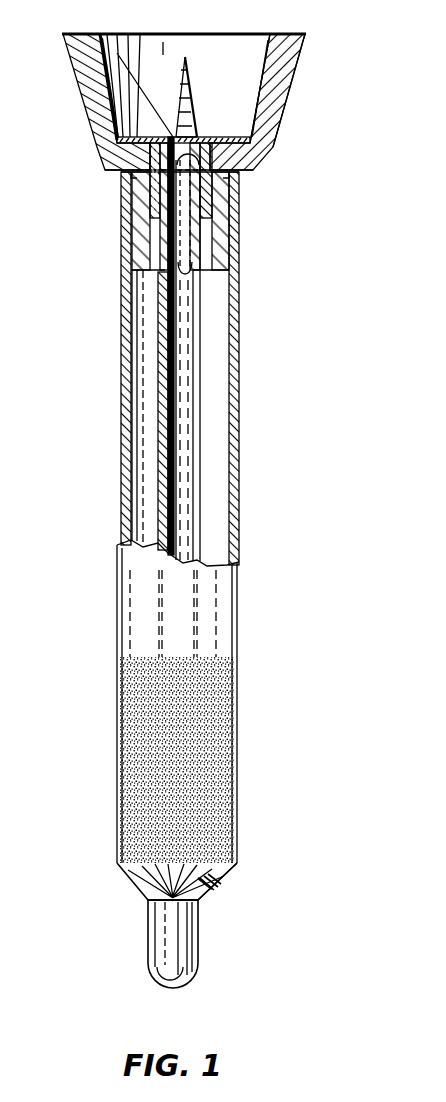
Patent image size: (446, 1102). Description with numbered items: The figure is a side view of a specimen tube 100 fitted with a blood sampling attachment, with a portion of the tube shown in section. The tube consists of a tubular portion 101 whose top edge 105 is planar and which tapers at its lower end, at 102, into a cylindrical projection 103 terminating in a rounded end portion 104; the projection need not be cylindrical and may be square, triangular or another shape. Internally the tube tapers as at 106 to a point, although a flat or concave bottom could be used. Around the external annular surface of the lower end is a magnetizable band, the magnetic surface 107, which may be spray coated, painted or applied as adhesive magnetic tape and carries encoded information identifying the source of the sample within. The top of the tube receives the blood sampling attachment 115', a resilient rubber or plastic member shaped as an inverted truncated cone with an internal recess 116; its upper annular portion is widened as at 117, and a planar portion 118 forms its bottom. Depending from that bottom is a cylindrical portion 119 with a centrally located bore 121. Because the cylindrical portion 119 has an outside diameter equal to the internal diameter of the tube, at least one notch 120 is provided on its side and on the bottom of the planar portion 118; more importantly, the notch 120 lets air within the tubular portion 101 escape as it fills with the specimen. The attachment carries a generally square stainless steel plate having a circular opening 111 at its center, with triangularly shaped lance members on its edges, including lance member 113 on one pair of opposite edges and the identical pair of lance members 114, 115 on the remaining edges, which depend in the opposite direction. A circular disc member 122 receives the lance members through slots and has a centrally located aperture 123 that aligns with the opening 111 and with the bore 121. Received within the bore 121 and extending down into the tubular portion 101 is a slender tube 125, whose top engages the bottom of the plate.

The specimen tube 100 is at (289, 31).
The tubular portion 101 is at (243, 270).
The taper of the lower end 102 is at (210, 882).
The cylindrical projection 103 is at (197, 937).
The rounded end portion 104 is at (190, 988).
The top edge 105 is at (227, 173).
The internal taper 106 is at (220, 878).
The magnetic surface 107 is at (233, 741).
The circular opening 111 is at (217, 155).
The lance member 113 is at (157, 140).
The lance member 114 is at (213, 207).
The lance member 115 is at (113, 180).
The blood sampling attachment 115' is at (310, 90).
The internal recess 116 is at (268, 67).
The widened upper annular portion 117 is at (287, 70).
The planar portion 118 is at (130, 156).
The cylindrical portion 119 is at (147, 257).
The notch 120 is at (187, 273).
The bore 121 is at (200, 228).
The circular disc member 122 is at (107, 42).
The aperture 123 is at (108, 33).
The slender tube 125 is at (212, 466).